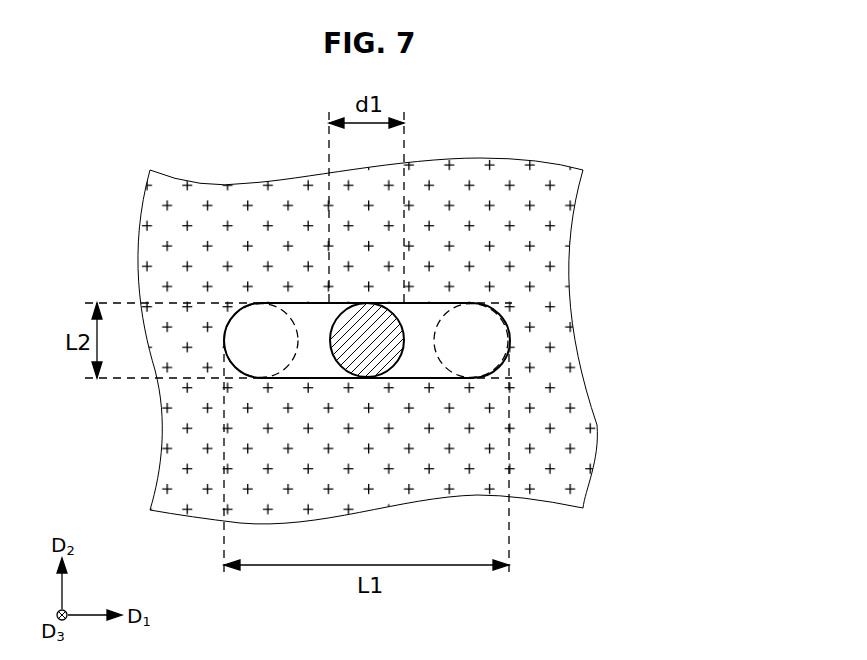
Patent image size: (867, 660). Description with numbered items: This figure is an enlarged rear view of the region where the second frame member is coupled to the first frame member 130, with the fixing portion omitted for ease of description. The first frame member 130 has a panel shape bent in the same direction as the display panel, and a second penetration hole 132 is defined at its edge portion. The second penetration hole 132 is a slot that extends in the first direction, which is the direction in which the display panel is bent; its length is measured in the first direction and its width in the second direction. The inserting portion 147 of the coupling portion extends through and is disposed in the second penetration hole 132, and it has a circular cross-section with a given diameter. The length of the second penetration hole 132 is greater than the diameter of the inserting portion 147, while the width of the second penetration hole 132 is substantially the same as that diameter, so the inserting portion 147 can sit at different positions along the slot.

The first frame member 130 is at (483, 213).
The second penetration hole 132 is at (510, 347).
The inserting portion 147 is at (365, 362).